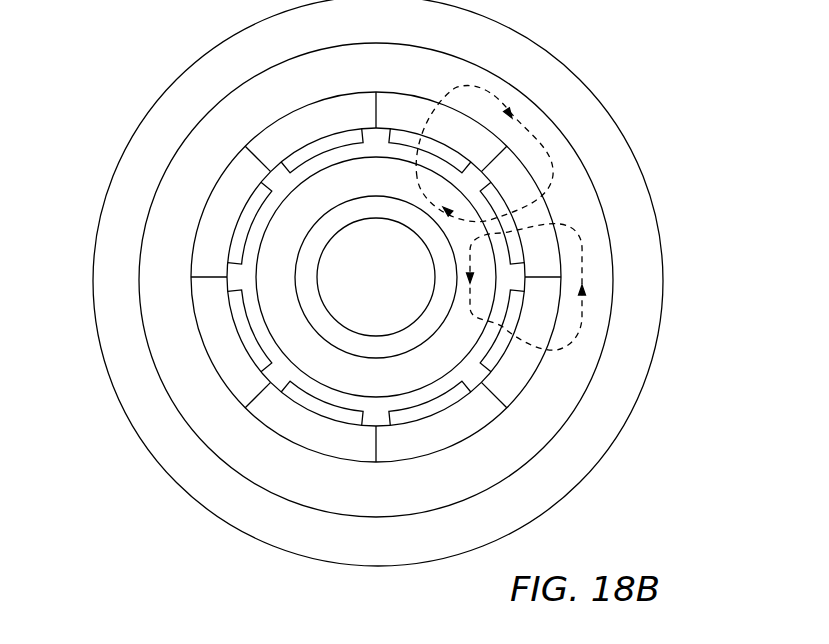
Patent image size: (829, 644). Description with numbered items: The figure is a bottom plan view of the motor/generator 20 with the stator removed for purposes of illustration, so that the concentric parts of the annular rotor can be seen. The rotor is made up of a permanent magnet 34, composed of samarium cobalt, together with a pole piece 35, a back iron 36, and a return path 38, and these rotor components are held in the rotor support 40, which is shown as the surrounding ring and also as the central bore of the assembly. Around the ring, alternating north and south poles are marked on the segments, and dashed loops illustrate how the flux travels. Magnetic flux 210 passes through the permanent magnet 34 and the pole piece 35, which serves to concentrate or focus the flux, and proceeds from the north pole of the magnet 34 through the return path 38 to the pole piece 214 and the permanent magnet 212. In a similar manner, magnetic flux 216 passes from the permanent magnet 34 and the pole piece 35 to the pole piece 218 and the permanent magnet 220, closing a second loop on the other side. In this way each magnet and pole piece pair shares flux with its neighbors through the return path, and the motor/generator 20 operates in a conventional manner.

The motor/generator 20 is at (94, 174).
The permanent magnet 34 is at (543, 202).
The pole piece 35 is at (500, 222).
The back iron 36 is at (505, 462).
The return path 38 is at (381, 196).
The rotor support 40 is at (600, 120).
The magnetic flux 210 is at (505, 103).
The permanent magnet 212 is at (398, 98).
The pole piece 214 is at (402, 137).
The magnetic flux 216 is at (582, 316).
The pole piece 218 is at (497, 343).
The permanent magnet 220 is at (518, 376).